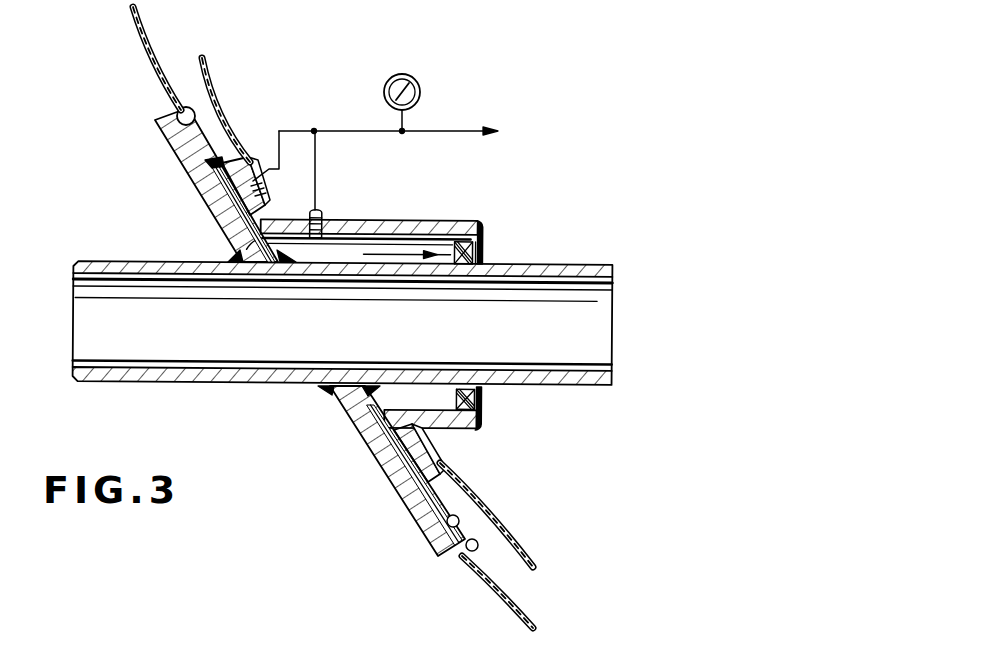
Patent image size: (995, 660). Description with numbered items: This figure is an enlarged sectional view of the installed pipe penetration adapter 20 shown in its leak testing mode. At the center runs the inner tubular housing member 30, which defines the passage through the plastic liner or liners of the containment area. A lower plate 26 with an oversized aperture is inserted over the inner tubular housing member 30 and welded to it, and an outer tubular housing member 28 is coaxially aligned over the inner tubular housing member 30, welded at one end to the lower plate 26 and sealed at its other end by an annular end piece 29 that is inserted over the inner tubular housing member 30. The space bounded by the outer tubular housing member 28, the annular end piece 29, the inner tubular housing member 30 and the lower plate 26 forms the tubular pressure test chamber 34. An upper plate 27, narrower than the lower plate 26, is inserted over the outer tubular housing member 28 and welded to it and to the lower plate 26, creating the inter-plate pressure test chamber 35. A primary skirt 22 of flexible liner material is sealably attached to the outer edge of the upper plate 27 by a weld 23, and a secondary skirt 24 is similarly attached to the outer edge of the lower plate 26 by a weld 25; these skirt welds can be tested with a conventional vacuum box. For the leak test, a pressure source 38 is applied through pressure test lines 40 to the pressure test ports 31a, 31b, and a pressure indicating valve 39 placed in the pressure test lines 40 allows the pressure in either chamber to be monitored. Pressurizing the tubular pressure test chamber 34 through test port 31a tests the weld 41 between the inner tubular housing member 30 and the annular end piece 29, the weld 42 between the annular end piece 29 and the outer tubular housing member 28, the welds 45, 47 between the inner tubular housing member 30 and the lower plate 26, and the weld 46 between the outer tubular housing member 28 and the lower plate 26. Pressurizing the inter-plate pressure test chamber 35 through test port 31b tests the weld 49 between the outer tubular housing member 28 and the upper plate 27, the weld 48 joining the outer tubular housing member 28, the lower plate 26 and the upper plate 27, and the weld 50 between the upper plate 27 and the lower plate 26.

The pipe penetration adapter 20 is at (286, 514).
The primary skirt 22 is at (518, 532).
The weld 23 is at (446, 441).
The secondary skirt 24 is at (502, 588).
The weld 25 is at (447, 523).
The lower plate 26 is at (160, 128).
The upper plate 27 is at (257, 223).
The outer tubular housing member 28 is at (408, 216).
The annular end piece 29 is at (483, 399).
The inner tubular housing member 30 is at (599, 262).
The pressure test port 31a is at (320, 209).
The pressure test port 31b is at (238, 110).
The tubular pressure test chamber 34 is at (440, 230).
The inter-plate pressure test chamber 35 is at (217, 182).
The pressure source 38 is at (586, 135).
The pressure indicating valve 39 is at (418, 86).
The pressure test lines 40 is at (360, 129).
The weld 41 is at (483, 258).
The weld 42 is at (482, 230).
The weld 45 is at (291, 263).
The weld 46 is at (383, 414).
The weld 47 is at (240, 260).
The weld 48 is at (387, 428).
The weld 49 is at (268, 213).
The weld 50 is at (216, 162).